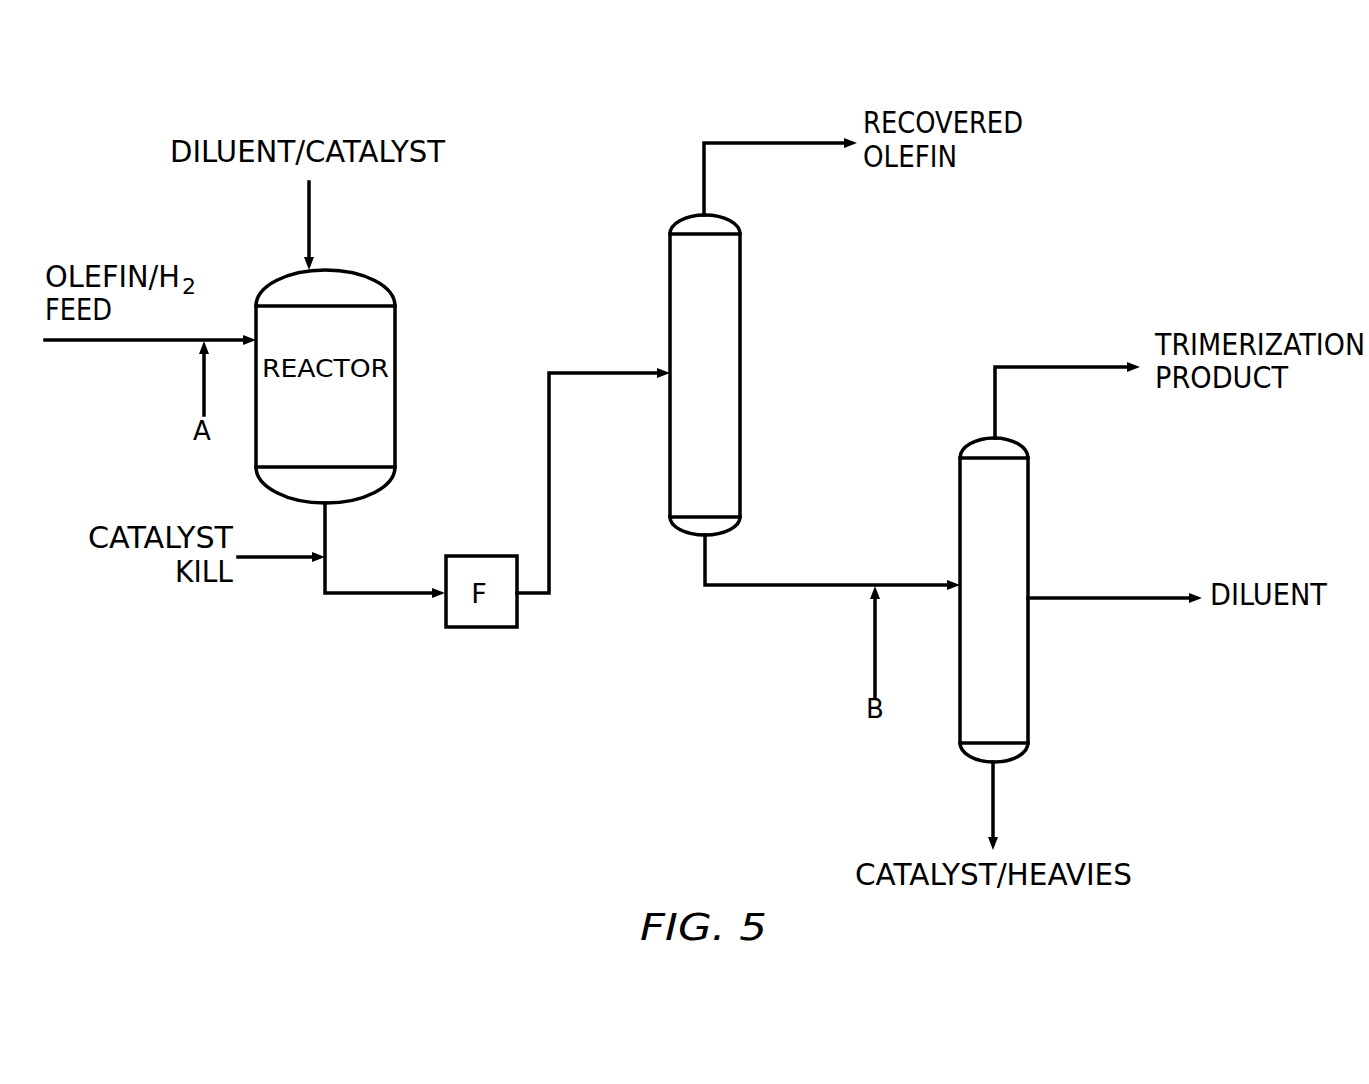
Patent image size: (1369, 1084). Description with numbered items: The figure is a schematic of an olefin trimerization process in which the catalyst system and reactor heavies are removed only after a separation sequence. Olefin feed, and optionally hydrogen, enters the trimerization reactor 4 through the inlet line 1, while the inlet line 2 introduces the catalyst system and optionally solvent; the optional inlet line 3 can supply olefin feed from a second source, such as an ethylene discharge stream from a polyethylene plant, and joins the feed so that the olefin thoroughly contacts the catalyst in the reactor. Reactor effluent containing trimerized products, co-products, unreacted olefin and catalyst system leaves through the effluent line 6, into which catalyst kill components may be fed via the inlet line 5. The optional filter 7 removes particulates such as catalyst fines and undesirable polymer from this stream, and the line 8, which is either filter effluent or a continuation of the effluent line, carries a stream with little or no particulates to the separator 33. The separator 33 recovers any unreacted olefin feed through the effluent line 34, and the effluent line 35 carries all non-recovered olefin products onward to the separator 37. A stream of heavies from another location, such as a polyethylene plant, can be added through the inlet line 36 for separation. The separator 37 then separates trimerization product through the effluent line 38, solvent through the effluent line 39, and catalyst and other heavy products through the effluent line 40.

The inlet line 1 is at (80, 343).
The inlet line 2 is at (310, 213).
The inlet line 3 is at (203, 390).
The trimerization reactor 4 is at (396, 327).
The inlet line 5 is at (276, 559).
The effluent line 6 is at (386, 596).
The filter 7 is at (463, 555).
The line 8 is at (548, 418).
The separator 33 is at (669, 250).
The effluent line 34 is at (750, 142).
The effluent line 35 is at (751, 592).
The inlet line 36 is at (874, 655).
The separator 37 is at (959, 478).
The effluent line 38 is at (1040, 366).
The effluent line 39 is at (1085, 597).
The effluent line 40 is at (994, 810).